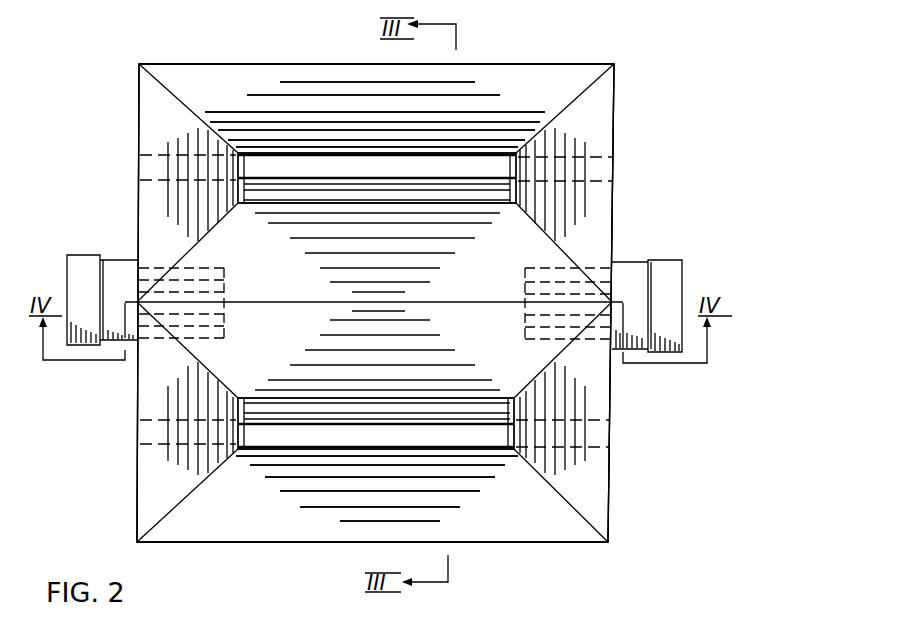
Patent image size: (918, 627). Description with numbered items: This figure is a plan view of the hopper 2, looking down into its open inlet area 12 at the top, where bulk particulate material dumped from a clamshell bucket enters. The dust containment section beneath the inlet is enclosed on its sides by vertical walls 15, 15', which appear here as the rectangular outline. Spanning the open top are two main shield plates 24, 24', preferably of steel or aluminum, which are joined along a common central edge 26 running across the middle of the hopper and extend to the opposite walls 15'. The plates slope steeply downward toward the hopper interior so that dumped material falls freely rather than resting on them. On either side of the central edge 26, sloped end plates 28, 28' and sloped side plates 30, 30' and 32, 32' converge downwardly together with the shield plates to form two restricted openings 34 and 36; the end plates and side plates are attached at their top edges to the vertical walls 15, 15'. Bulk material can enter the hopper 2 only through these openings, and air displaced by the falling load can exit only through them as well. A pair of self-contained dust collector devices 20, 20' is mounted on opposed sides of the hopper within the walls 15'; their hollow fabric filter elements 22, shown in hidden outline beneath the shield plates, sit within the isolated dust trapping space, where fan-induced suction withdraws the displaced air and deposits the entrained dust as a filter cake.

The hopper 2 is at (596, 52).
The open inlet area 12 is at (138, 96).
The vertical wall 15 is at (375, 308).
The vertical wall 15' is at (373, 303).
The dust collector device 20 is at (684, 295).
The dust collector device 20' is at (77, 273).
The hollow fabric filter element 22 is at (578, 263).
The main shield plate 24 is at (406, 183).
The main shield plate 24' is at (409, 422).
The common edge 26 is at (445, 302).
The sloped end plate 28 is at (375, 85).
The sloped end plate 28' is at (402, 524).
The sloped side plate 30 is at (601, 164).
The sloped side plate 30' is at (149, 184).
The sloped side plate 32 is at (600, 420).
The sloped side plate 32' is at (149, 450).
The restricted opening 34 is at (462, 162).
The restricted opening 36 is at (436, 428).